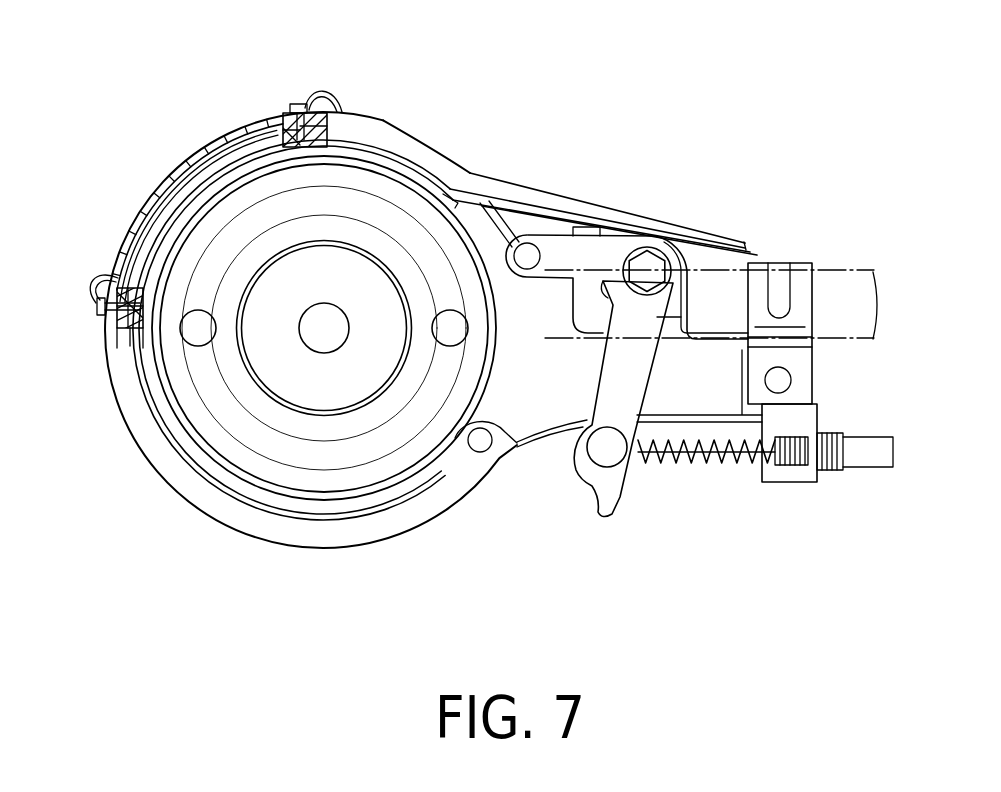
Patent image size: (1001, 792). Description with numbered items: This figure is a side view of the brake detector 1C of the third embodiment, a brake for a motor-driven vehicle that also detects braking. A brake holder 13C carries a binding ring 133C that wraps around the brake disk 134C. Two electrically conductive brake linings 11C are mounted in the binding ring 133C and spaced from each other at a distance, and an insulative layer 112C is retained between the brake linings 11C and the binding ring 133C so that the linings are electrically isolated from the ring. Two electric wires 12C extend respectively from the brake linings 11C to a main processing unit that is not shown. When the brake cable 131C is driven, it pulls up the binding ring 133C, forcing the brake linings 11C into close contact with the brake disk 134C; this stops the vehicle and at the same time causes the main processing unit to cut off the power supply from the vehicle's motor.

The brake detector 1C is at (511, 485).
The brake linings 11C is at (253, 157).
The insulative layer 112C is at (197, 178).
The electric wires 12C is at (332, 91).
The brake holder 13C is at (427, 150).
The binding ring 133C is at (518, 217).
The brake disk 134C is at (257, 467).
The brake cable 131C is at (713, 457).